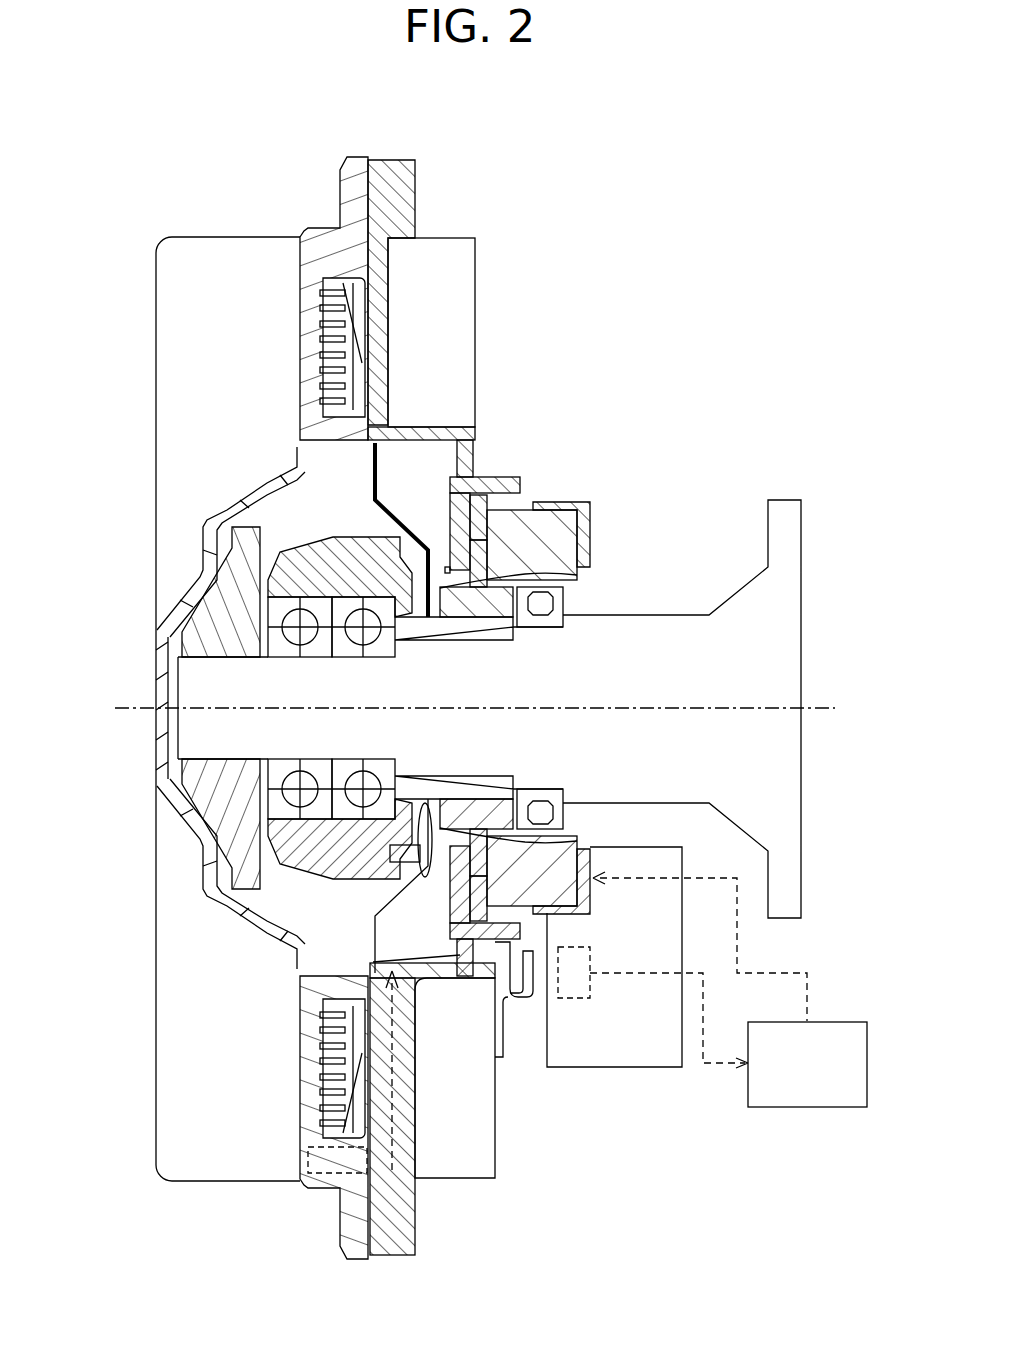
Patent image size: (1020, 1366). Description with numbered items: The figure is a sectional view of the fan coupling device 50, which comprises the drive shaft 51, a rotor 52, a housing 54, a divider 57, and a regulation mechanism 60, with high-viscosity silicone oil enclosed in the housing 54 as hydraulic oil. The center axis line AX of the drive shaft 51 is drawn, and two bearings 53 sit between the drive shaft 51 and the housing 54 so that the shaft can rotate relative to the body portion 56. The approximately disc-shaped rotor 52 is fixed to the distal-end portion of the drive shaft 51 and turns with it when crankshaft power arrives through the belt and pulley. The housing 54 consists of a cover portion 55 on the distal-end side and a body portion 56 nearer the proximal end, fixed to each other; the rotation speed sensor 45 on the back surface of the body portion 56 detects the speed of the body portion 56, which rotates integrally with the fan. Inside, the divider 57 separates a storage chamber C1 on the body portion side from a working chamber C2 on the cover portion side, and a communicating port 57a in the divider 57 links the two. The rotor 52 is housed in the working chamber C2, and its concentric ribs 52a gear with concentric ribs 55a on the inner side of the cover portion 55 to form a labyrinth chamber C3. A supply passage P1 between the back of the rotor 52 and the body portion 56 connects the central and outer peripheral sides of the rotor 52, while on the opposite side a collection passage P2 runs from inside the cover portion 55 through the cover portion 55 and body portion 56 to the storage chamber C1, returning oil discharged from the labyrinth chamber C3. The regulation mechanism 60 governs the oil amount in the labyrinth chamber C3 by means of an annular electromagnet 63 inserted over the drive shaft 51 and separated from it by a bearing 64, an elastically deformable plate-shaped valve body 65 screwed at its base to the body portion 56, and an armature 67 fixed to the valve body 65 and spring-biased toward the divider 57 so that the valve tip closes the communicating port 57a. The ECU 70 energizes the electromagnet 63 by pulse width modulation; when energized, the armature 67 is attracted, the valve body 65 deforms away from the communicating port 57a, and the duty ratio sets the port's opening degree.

The rotation speed sensor 45 is at (565, 1000).
The fan coupling device 50 is at (347, 412).
The drive shaft 51 is at (670, 615).
The rotor 52 is at (243, 520).
The ribs 52a is at (340, 300).
The bearings 53 is at (260, 602).
The housing 54 is at (320, 278).
The cover portion 55 is at (340, 160).
The ribs 55a is at (340, 322).
The body portion 56 is at (383, 160).
The divider 57 is at (345, 490).
The communicating port 57a is at (383, 417).
The regulation mechanism 60 is at (605, 534).
The electromagnet 63 is at (583, 525).
The bearing 64 is at (560, 593).
The valve body 65 is at (430, 480).
The armature 67 is at (573, 582).
The ECU 70 is at (848, 1021).
The center axis line AX is at (493, 709).
The storage chamber C1 is at (417, 458).
The working chamber C2 is at (340, 488).
The labyrinth chamber C3 is at (203, 346).
The supply passage P1 is at (367, 293).
The collection passage P2 is at (392, 1173).